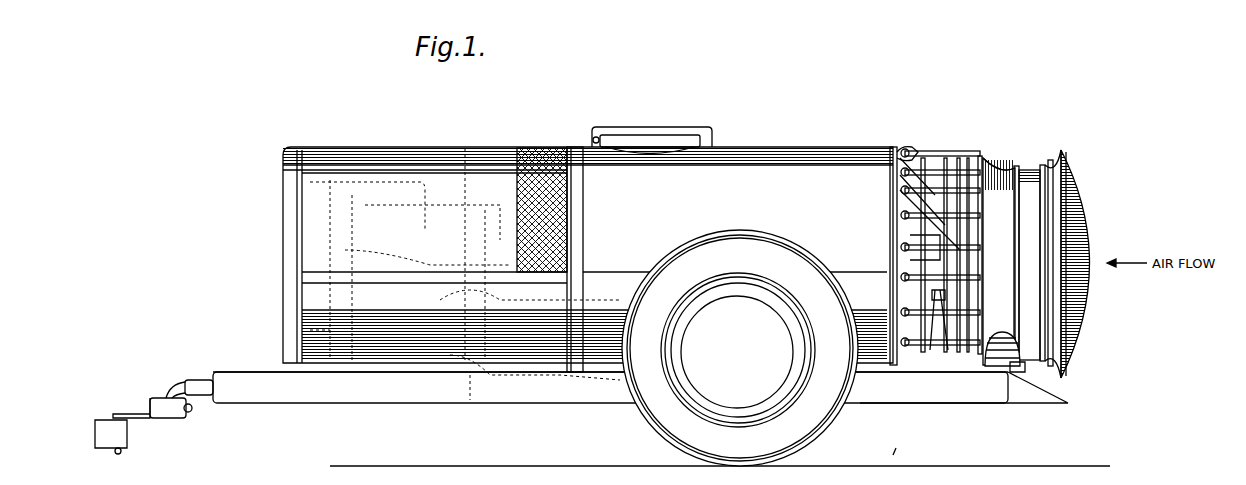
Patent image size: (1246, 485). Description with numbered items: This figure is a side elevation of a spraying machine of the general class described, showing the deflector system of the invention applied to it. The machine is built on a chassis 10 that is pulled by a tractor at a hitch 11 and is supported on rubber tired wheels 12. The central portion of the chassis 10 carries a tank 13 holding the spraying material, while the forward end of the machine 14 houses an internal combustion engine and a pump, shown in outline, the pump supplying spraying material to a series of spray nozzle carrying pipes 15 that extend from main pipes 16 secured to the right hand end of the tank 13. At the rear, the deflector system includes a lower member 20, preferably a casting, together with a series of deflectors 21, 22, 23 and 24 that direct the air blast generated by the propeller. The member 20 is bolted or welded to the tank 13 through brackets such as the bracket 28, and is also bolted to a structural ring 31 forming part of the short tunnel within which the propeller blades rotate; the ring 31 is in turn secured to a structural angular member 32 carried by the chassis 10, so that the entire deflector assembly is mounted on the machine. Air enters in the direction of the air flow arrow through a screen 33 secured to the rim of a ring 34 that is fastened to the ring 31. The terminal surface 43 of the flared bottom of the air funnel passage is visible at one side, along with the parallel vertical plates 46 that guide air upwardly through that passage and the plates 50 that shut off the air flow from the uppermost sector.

The chassis 10 is at (946, 404).
The hitch 11 is at (181, 380).
The rubber tired wheels 12 is at (822, 420).
The tank 13 is at (727, 215).
The forward end of the machine 14 is at (375, 145).
The spray nozzle carrying pipes 15 is at (936, 165).
The main pipes 16 is at (904, 215).
The lower member 20 is at (993, 372).
The deflector 21 is at (986, 168).
The deflector 22 is at (969, 165).
The deflector 23 is at (958, 165).
The deflector 24 is at (944, 168).
The bracket 28 is at (932, 300).
The structural ring 31 is at (1027, 195).
The structural angular member 32 is at (1020, 366).
The screen 33 is at (1080, 188).
The ring 34 is at (1046, 172).
The terminal surface 43 is at (940, 258).
The vertical plates 46 is at (919, 170).
The plates 50 is at (935, 199).